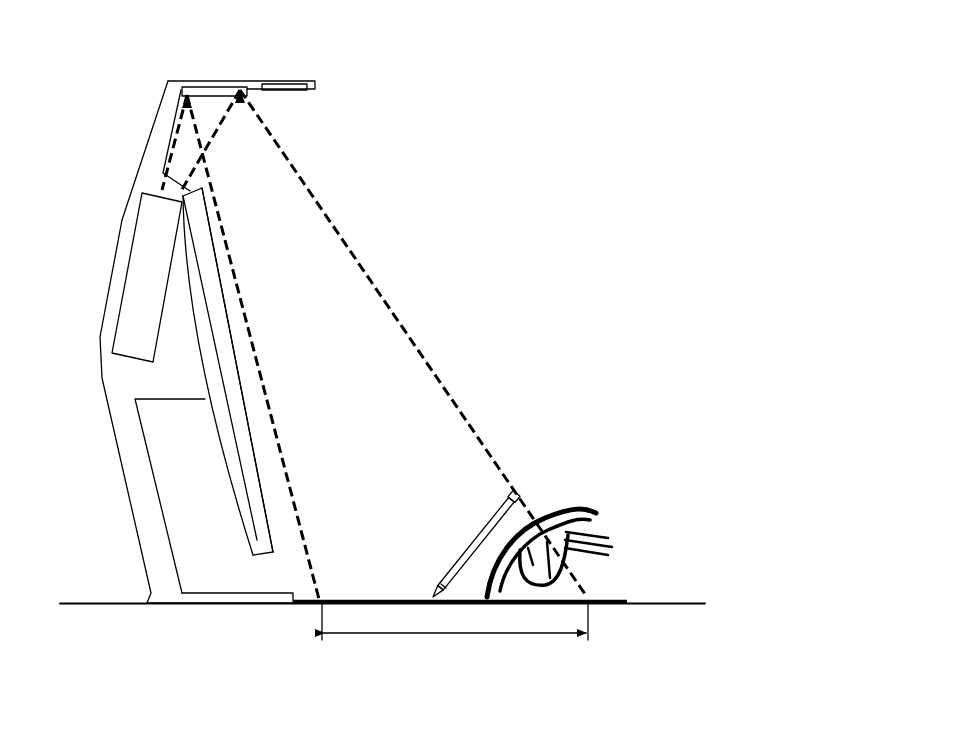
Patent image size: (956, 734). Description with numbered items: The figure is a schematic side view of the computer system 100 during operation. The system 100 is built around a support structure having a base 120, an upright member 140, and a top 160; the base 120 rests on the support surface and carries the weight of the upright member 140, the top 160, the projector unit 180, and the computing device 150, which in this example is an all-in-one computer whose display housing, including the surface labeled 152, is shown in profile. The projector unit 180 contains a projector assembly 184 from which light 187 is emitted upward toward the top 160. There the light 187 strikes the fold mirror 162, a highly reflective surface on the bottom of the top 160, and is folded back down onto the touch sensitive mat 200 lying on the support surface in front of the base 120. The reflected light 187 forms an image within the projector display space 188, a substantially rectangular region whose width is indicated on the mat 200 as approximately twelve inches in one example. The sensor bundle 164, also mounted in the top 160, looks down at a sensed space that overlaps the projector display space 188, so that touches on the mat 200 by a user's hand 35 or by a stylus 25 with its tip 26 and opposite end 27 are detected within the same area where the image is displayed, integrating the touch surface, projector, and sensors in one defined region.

The computer system 100 is at (497, 207).
The base 120 is at (177, 605).
The upright member 140 is at (101, 241).
The computing device 150 is at (219, 464).
The display rear surface 152 is at (250, 423).
The top 160 is at (208, 51).
The fold mirror 162 is at (228, 83).
The sensor bundle 164 is at (286, 83).
The projector unit 180 is at (126, 373).
The projector assembly 184 is at (135, 210).
The light 187 is at (291, 158).
The projector display space 188 is at (418, 588).
The touch sensitive mat 200 is at (617, 605).
The stylus 25 is at (487, 524).
The stylus tip 26 is at (445, 580).
The stylus end 27 is at (514, 488).
The user hand 35 is at (580, 512).